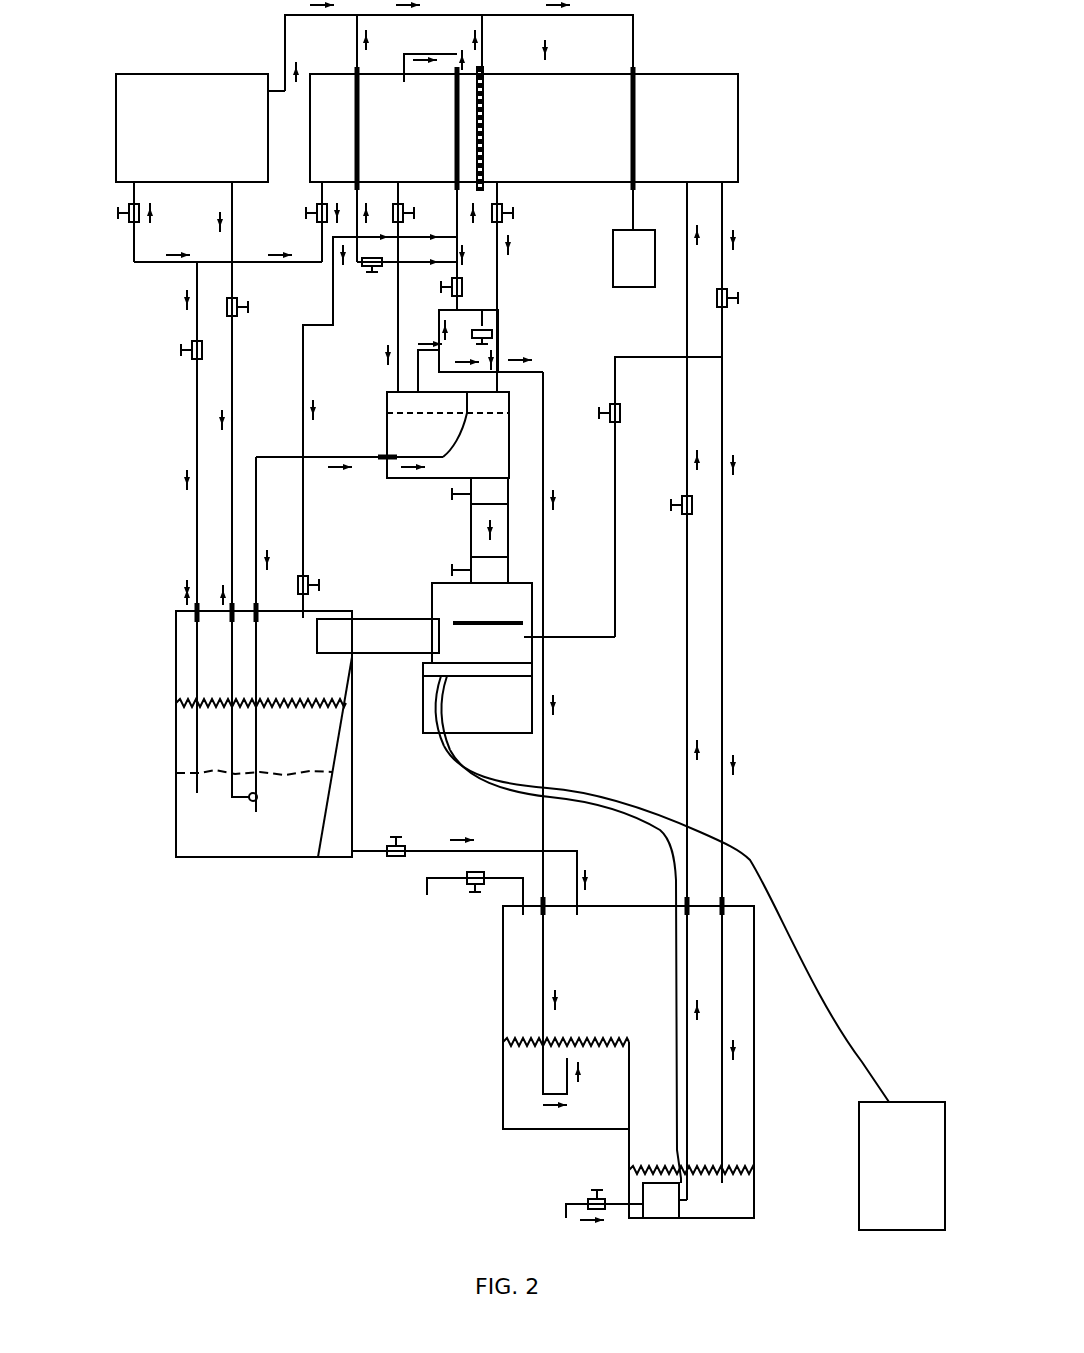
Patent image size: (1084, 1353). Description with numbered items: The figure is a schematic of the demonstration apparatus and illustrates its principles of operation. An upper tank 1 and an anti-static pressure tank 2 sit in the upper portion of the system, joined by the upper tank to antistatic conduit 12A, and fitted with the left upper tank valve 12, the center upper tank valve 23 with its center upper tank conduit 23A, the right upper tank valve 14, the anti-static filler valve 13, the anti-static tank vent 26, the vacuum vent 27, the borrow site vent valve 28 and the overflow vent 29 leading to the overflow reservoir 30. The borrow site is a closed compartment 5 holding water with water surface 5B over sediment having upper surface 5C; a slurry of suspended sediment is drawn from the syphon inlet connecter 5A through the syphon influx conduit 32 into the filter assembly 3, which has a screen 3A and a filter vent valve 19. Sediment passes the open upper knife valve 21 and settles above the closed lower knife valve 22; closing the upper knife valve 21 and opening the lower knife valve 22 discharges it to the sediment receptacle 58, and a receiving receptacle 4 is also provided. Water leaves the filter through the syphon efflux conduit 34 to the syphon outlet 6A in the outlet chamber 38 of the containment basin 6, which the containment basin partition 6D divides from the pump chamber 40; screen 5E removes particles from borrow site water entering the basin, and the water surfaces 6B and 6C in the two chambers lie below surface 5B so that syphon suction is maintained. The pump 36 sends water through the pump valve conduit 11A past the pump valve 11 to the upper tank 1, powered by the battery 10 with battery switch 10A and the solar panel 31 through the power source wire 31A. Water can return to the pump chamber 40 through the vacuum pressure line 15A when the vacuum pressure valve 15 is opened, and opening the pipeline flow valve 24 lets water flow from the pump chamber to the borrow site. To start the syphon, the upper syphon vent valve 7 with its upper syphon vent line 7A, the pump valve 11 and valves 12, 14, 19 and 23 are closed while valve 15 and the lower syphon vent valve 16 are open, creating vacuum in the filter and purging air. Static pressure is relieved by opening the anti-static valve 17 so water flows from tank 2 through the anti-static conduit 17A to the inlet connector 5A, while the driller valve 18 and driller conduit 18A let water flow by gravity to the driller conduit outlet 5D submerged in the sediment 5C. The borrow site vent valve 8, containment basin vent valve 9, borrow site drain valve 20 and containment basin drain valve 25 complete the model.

The upper tank 1 is at (524, 128).
The anti-static pressure tank 2 is at (200, 128).
The filter assembly 3 is at (448, 435).
The screen 3A is at (418, 395).
The receiving receptacle 4 is at (378, 636).
The borrow site 5 is at (264, 721).
The syphon inlet connecter 5A is at (266, 723).
The water surface 5B is at (229, 689).
The sediment 5C is at (222, 758).
The driller conduit outlet 5D is at (213, 707).
The screen 5E is at (317, 757).
The containment basin 6 is at (628, 1057).
The syphon outlet 6A is at (586, 1011).
The water surface 6B is at (586, 1029).
The water surface 6C is at (721, 1184).
The containment basin partition 6D is at (648, 1094).
The upper syphon vent valve 7 is at (406, 274).
The upper syphon vent line 7A is at (333, 138).
The borrow site vent valve 8 is at (331, 573).
The containment basin vent valve 9 is at (475, 902).
The battery 10 is at (450, 698).
The battery switch 10A is at (476, 713).
The pump valve 11 is at (667, 691).
The pump valve conduit 11A is at (647, 692).
The left upper tank valve 12 is at (299, 222).
The upper tank to antistatic conduit 12A is at (205, 239).
The anti-static filler valve 13 is at (105, 222).
The right upper tank valve 14 is at (536, 287).
The vacuum pressure valve 15 is at (757, 682).
The vacuum pressure line 15A is at (755, 625).
The lower syphon vent valve 16 is at (433, 293).
The anti-static valve 17 is at (270, 529).
The anti-static conduit 17A is at (251, 421).
The driller valve 18 is at (160, 527).
The driller conduit 18A is at (185, 544).
The filter vent valve 19 is at (458, 333).
The borrow site drain valve 20 is at (464, 856).
The upper knife valve 21 is at (447, 530).
The lower knife valve 22 is at (447, 558).
The center upper tank valve 23 is at (405, 287).
The center upper tank conduit 23A is at (380, 426).
The pipeline flow valve 24 is at (641, 497).
The containment basin drain valve 25 is at (589, 1187).
The anti-static tank vent 26 is at (429, 46).
The vacuum vent 27 is at (428, 166).
The borrow site vent valve 28 is at (389, 198).
The overflow vent 29 is at (587, 133).
The overflow reservoir 30 is at (634, 258).
The solar panel 31 is at (902, 1166).
The power source wire 31A is at (666, 964).
The syphon influx conduit 32 is at (349, 617).
The syphon efflux conduit 34 is at (516, 725).
The pump 36 is at (661, 1200).
The outlet chamber 38 is at (609, 1114).
The pump chamber 40 is at (734, 1204).
The sediment receptacle 58 is at (523, 623).